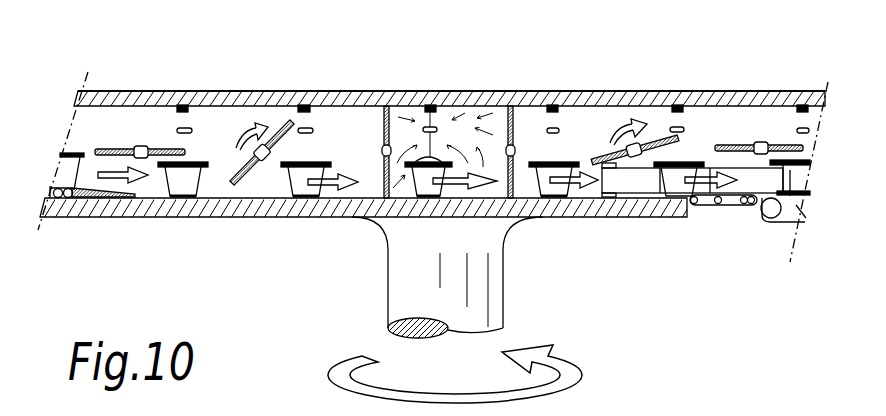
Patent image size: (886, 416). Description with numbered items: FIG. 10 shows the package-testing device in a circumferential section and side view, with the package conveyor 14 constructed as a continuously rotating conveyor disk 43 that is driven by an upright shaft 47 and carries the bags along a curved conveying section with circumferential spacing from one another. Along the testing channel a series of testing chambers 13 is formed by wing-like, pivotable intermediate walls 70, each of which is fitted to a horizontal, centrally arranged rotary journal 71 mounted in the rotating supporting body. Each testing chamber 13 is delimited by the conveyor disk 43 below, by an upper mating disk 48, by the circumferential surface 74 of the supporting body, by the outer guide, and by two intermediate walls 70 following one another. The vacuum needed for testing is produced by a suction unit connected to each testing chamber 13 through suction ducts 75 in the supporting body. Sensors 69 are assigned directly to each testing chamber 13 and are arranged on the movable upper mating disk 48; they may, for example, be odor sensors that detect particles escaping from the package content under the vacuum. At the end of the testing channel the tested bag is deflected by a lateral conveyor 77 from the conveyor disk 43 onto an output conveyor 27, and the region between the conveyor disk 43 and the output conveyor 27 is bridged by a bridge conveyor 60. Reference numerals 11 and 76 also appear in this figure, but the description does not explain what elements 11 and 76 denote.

The container 11 is at (445, 192).
The testing chamber 13 is at (465, 132).
The package conveyor 14 is at (150, 240).
The output conveyor 27 is at (797, 207).
The conveyor disk 43 is at (110, 216).
The upright shaft 47 is at (405, 295).
The upper mating disk 48 is at (182, 105).
The bridge conveyor 60 is at (705, 200).
The sensor 69 is at (560, 90).
The intermediate wall 70 is at (112, 147).
The rotary journal 71 is at (386, 158).
The circumferential surface 74 is at (347, 130).
The suction duct 75 is at (305, 128).
The inclined spindle 76 is at (257, 193).
The lateral conveyor 77 is at (767, 220).